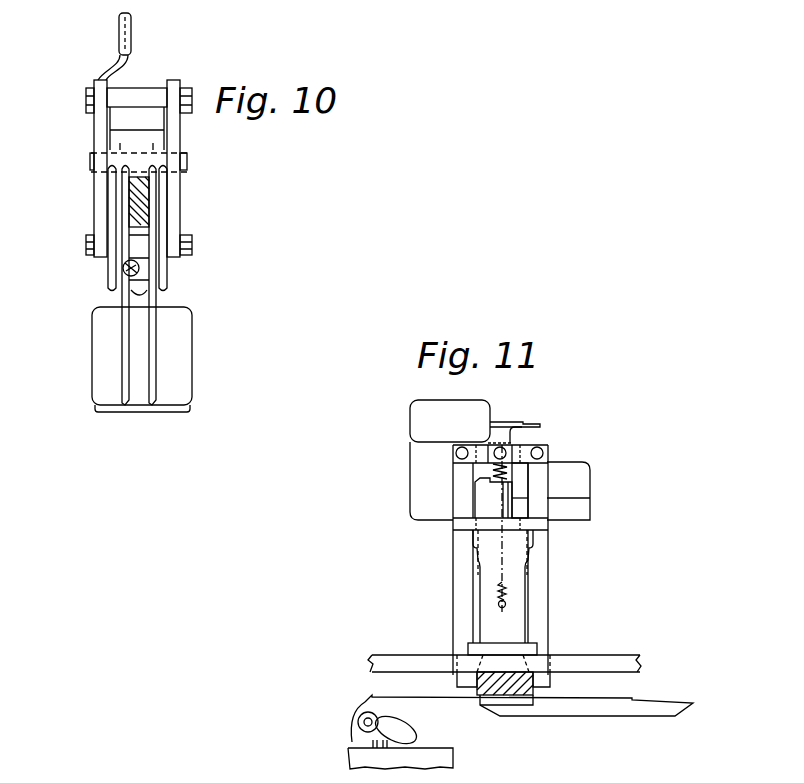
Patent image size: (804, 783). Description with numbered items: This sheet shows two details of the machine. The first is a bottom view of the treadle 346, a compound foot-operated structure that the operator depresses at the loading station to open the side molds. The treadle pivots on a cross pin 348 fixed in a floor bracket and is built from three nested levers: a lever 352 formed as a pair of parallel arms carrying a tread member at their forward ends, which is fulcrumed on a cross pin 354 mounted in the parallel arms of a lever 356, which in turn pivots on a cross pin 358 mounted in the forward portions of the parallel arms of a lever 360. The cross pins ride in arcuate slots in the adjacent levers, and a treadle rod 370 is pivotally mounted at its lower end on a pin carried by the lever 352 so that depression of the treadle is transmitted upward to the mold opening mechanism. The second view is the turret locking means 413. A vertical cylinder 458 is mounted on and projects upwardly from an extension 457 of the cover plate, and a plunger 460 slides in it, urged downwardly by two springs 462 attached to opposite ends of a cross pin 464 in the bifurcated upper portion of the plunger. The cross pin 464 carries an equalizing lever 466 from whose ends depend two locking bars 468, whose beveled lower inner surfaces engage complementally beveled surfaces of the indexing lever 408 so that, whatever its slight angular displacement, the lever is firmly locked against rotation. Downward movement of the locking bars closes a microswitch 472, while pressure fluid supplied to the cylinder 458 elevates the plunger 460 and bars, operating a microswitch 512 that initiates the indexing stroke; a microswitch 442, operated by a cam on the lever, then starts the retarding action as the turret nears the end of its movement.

In FIG. 10, the treadle 346 is at (133, 419).
In FIG. 10, the cross pin 348 is at (86, 99).
In FIG. 10, the lever 352 is at (122, 332).
In FIG. 10, the cross pin 354 is at (188, 161).
In FIG. 10, the lever 356 is at (115, 208).
In FIG. 10, the cross pin 358 is at (191, 246).
In FIG. 10, the lever 360 is at (120, 62).
In FIG. 10, the treadle rod 370 is at (145, 270).
In FIG. 11, the lever 408 is at (502, 690).
In FIG. 11, the turret locking means 413 is at (401, 558).
In FIG. 11, the microswitch 442 is at (346, 758).
In FIG. 11, the extension of the cover plate 457 is at (616, 662).
In FIG. 11, the vertical cylinder 458 is at (487, 612).
In FIG. 11, the plunger 460 is at (488, 492).
In FIG. 11, the springs 462 is at (505, 585).
In FIG. 11, the cross pin 464 is at (512, 442).
In FIG. 11, the equalizing lever 466 is at (521, 452).
In FIG. 11, the locking bars 468 is at (540, 620).
In FIG. 11, the microswitch 472 is at (597, 489).
In FIG. 11, the microswitch 512 is at (420, 423).